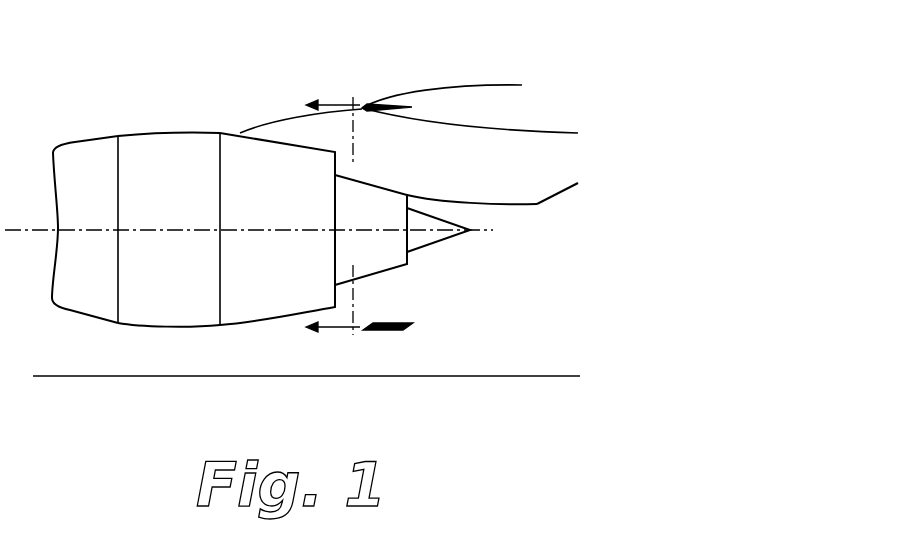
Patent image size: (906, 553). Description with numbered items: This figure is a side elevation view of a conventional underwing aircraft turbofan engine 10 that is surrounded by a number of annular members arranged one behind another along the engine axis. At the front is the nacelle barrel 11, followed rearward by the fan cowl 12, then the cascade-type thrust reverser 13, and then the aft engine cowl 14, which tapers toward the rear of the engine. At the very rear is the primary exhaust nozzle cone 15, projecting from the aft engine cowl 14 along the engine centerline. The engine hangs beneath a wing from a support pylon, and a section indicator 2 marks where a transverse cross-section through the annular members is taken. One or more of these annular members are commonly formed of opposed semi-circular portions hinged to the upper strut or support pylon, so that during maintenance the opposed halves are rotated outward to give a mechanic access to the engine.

The underwing aircraft turbofan engine 10 is at (82, 66).
The nacelle barrel 11 is at (82, 141).
The fan cowl 12 is at (184, 133).
The cascade-type thrust reverser 13 is at (270, 165).
The aft engine cowl 14 is at (378, 197).
The primary exhaust nozzle cone 15 is at (450, 238).
The section line for FIG. 2 is at (359, 221).